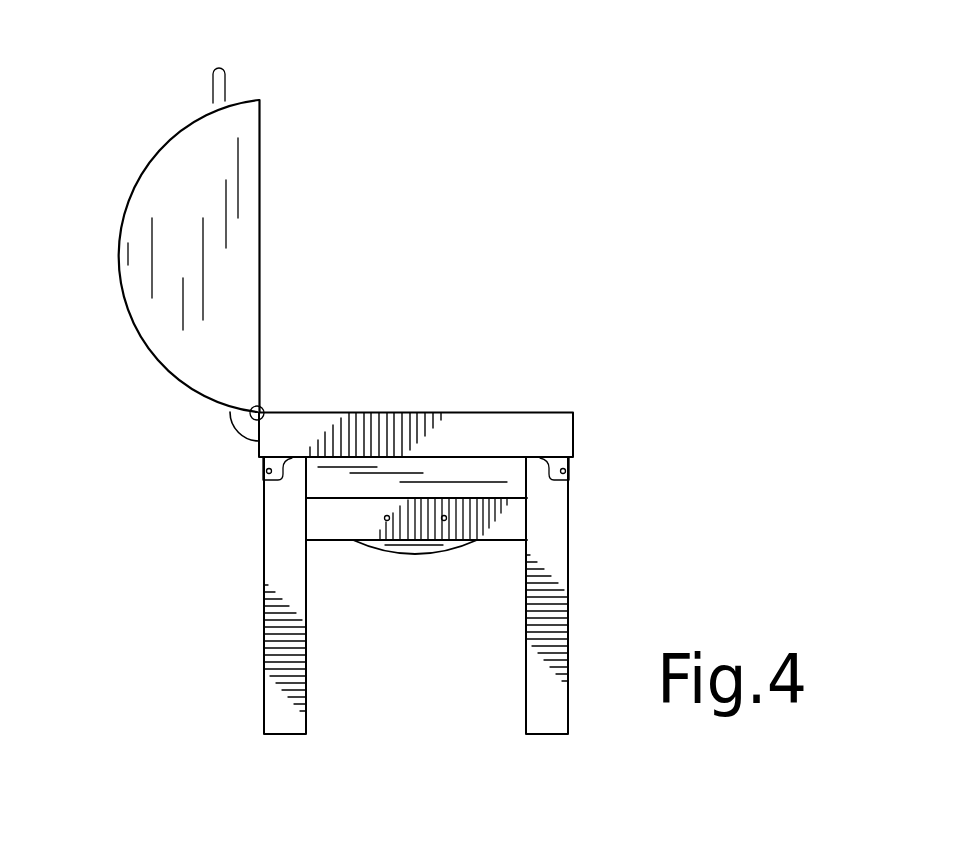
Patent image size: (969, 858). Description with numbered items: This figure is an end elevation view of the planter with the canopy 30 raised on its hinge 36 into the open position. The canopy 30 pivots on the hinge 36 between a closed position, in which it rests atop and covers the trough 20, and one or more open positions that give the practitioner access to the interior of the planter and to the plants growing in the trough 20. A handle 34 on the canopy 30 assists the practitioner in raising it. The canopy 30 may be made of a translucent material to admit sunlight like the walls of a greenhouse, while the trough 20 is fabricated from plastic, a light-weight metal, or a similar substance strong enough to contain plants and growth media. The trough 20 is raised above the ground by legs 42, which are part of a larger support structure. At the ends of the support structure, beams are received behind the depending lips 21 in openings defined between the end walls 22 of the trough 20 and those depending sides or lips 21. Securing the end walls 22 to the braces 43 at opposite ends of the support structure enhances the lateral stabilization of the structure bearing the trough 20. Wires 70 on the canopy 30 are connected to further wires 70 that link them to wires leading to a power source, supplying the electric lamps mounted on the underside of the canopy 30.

The trough 20 is at (423, 543).
The depending sides or lips 21 is at (562, 433).
The end walls 22 is at (510, 472).
The canopy 30 is at (120, 224).
The handle 34 is at (218, 70).
The hinge 36 is at (265, 408).
The legs 42 is at (278, 714).
The braces 43 is at (503, 530).
The wires 70 is at (245, 440).